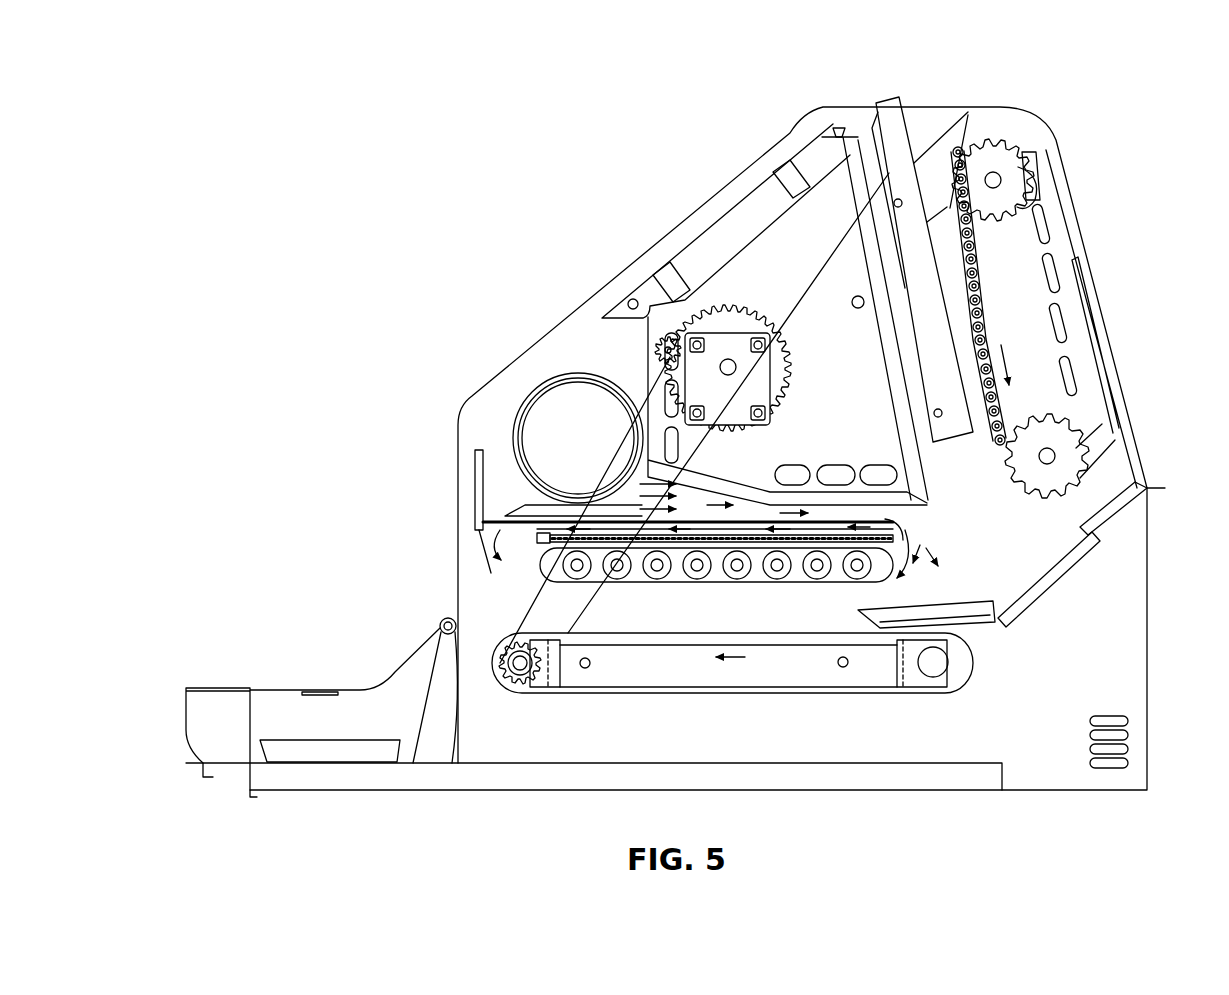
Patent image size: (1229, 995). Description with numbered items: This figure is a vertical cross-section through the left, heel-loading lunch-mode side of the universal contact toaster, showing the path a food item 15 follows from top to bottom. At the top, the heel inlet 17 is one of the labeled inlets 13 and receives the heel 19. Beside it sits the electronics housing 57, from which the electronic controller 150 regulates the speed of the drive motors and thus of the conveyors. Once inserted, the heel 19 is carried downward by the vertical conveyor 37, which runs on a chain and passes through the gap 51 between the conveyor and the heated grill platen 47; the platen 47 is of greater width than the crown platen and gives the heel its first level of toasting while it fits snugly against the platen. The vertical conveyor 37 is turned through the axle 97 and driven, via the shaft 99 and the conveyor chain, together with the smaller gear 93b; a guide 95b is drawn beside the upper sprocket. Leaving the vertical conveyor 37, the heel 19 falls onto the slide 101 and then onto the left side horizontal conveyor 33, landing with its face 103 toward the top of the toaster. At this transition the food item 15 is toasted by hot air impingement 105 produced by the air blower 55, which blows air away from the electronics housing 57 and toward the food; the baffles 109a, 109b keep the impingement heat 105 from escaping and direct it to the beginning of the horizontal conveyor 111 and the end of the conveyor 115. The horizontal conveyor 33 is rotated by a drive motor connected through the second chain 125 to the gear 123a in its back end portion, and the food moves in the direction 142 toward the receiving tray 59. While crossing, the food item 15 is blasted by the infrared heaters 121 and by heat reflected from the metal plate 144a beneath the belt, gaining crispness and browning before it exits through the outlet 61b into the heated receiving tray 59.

The inlet 13 is at (885, 88).
The heel 19 is at (935, 118).
The food item 15 is at (1065, 272).
The heel inlet 17 is at (1002, 102).
The electronics housing 57 is at (808, 153).
The shaft 99 is at (996, 178).
The upper guide 95b is at (1042, 196).
The electronic controller 150 is at (726, 217).
The vertical conveyor 37 is at (980, 250).
The gap 51 is at (982, 285).
The grill platen 47 is at (989, 333).
The air blower 55 is at (537, 392).
The axle 97 is at (1076, 448).
The smaller gear 93b is at (1080, 478).
The baffle 109b is at (470, 537).
The baffle 109a is at (918, 515).
The impingement heat 105 is at (945, 575).
The face 103 is at (336, 738).
The outlet 61b is at (442, 621).
The second chain 125 is at (615, 590).
The direction 142 is at (742, 650).
The infrared heater 121 is at (818, 590).
The metal plate 144a is at (755, 648).
The receiving tray 59 is at (184, 712).
The gear 123a is at (510, 700).
The end of the conveyor 115 is at (552, 706).
The left side horizontal conveyor 33 is at (769, 689).
The beginning of the horizontal conveyor 111 is at (947, 708).
The slide 101 is at (1137, 655).